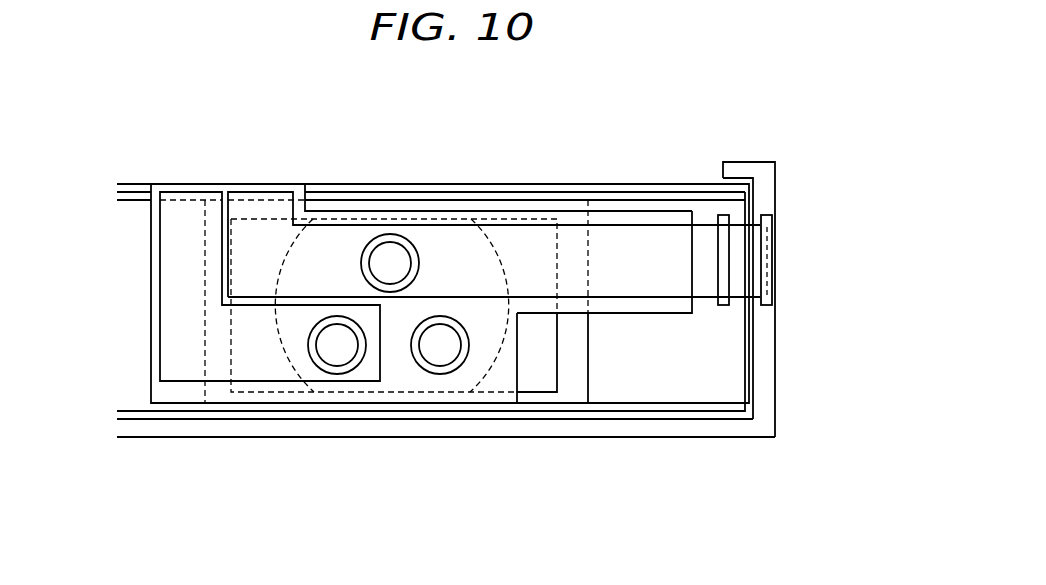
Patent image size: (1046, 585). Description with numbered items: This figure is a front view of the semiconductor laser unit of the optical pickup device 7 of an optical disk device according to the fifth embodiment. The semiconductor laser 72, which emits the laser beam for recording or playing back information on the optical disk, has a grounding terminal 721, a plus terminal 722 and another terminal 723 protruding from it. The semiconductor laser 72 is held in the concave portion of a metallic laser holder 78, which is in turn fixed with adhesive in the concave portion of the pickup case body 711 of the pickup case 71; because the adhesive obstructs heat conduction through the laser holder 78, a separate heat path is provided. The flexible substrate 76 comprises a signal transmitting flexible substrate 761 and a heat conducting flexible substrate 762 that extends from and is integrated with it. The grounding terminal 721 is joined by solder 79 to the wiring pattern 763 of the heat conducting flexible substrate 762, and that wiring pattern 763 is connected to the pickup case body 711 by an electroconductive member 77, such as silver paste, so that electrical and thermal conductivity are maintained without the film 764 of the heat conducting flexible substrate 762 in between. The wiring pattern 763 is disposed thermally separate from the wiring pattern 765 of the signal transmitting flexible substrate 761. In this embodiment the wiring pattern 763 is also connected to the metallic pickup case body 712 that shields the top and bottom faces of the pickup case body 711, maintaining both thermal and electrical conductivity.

The optical pickup device 7 is at (560, 168).
The pickup case 71 is at (135, 262).
The semiconductor laser 72 is at (398, 373).
The flexible substrate 76 is at (657, 168).
The electroconductive member 77 is at (722, 308).
The laser holder 78 is at (535, 378).
The solder 79 is at (400, 240).
The pickup case body 711 is at (613, 390).
The metallic pickup case body 712 is at (760, 162).
The grounding terminal 721 is at (385, 258).
The plus terminal 722 is at (332, 340).
The another terminal 723 is at (440, 357).
The signal transmitting flexible substrate 761 is at (153, 406).
The heat conducting flexible substrate 762 is at (572, 316).
The wiring pattern 763 is at (637, 278).
The film 764 is at (678, 303).
The wiring pattern 765 is at (190, 383).